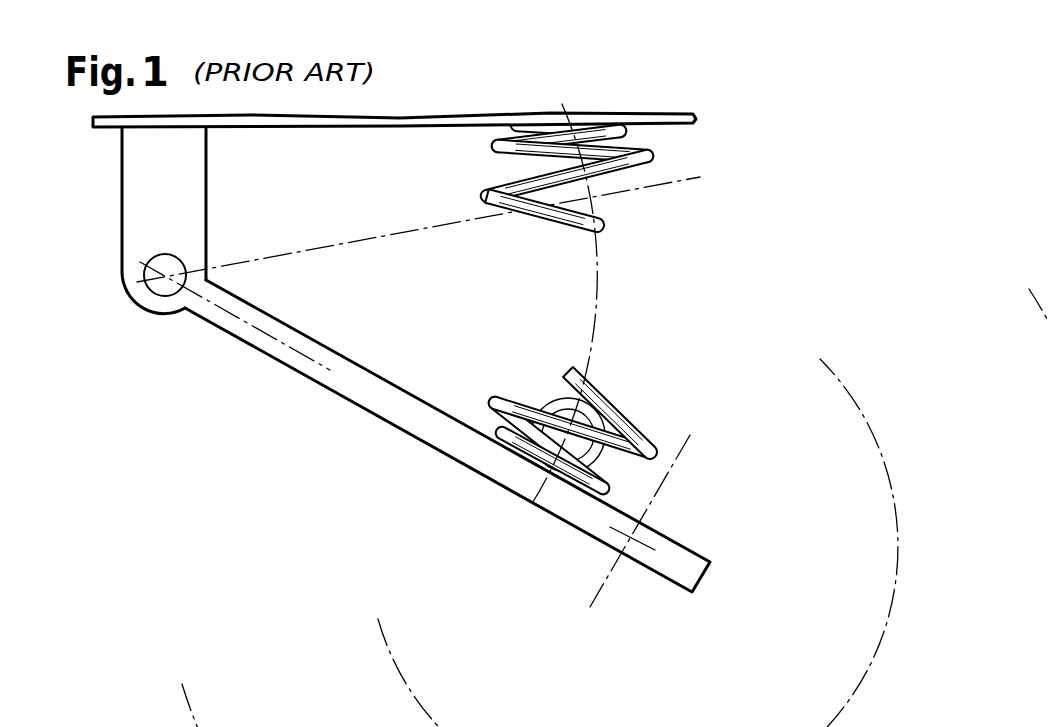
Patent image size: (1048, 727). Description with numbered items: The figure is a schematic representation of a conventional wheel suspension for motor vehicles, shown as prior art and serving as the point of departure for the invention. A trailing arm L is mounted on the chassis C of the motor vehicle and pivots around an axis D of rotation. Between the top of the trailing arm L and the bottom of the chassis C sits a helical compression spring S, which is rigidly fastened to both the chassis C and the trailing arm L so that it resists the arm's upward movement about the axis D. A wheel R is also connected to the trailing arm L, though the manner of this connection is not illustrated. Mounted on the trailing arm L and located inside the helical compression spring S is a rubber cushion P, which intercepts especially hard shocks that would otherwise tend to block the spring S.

The chassis C is at (270, 124).
The axis of rotation D is at (152, 290).
The helical compression spring S is at (552, 222).
The rubber cushion P is at (588, 460).
The trailing arm L is at (678, 572).
The wheel R is at (170, 497).